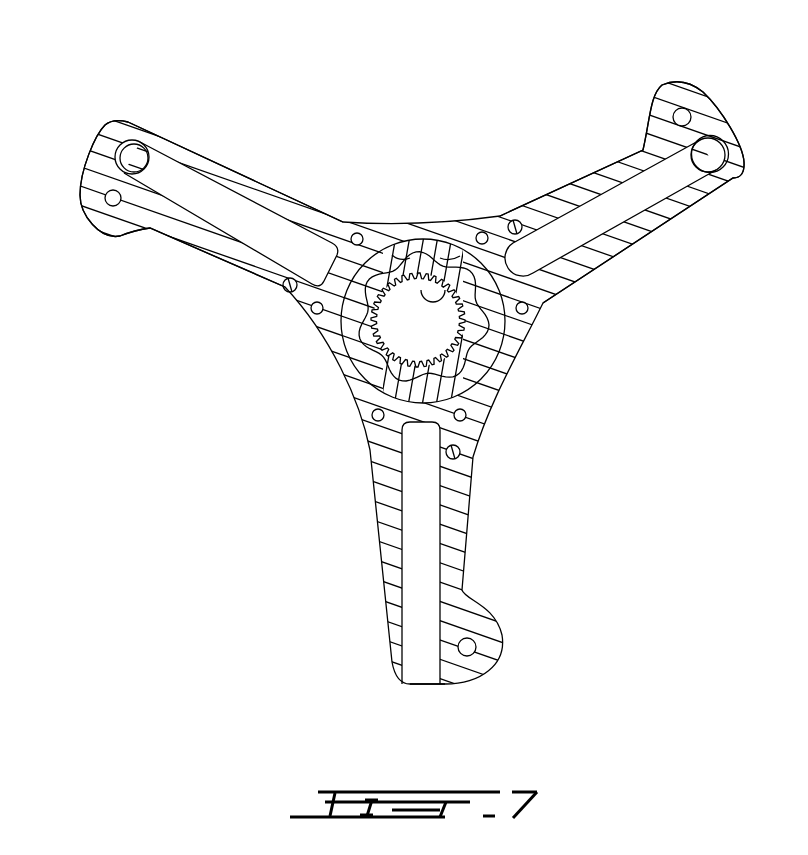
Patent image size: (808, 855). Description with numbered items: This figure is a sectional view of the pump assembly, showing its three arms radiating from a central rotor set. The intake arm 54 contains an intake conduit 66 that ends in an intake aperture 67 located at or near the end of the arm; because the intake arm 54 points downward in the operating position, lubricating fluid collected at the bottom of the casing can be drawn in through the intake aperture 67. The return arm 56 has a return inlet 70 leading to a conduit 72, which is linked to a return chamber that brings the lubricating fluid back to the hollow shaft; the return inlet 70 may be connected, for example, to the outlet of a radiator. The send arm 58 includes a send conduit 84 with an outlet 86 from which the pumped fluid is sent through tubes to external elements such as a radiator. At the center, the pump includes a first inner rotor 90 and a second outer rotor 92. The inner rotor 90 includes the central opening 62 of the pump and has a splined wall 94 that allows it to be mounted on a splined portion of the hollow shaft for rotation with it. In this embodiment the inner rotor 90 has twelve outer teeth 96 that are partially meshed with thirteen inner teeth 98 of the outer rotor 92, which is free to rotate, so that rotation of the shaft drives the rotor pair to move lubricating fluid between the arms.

The intake arm 54 is at (393, 651).
The return arm 56 is at (698, 192).
The send arm 58 is at (163, 207).
The central opening 62 is at (413, 323).
The intake conduit 66 is at (423, 533).
The intake aperture 67 is at (437, 688).
The return inlet 70 is at (713, 158).
The conduit 72 is at (608, 213).
The send conduit 84 is at (215, 205).
The outlet 86 is at (133, 157).
The inner rotor 90 is at (490, 345).
The outer rotor 92 is at (480, 367).
The splined wall 94 is at (450, 256).
The outer teeth 96 is at (405, 256).
The inner teeth 98 is at (433, 290).